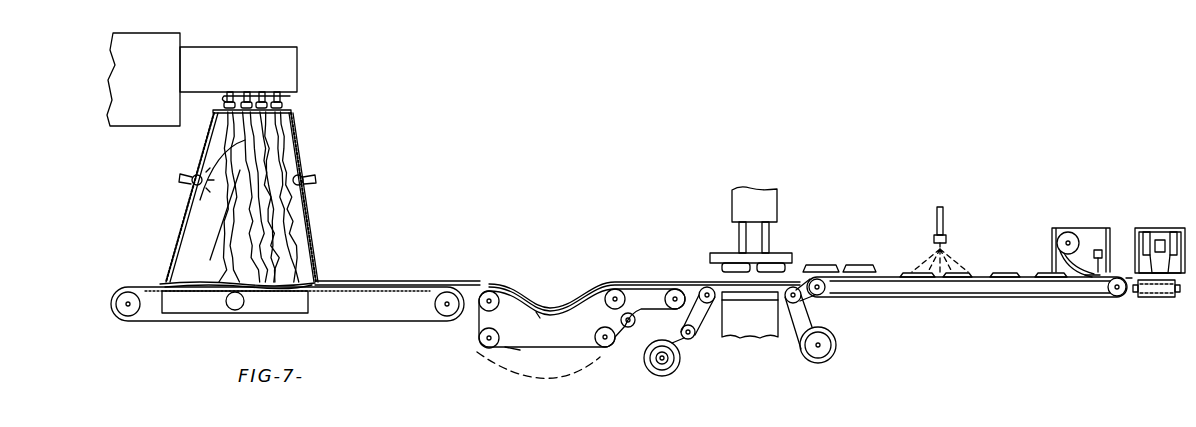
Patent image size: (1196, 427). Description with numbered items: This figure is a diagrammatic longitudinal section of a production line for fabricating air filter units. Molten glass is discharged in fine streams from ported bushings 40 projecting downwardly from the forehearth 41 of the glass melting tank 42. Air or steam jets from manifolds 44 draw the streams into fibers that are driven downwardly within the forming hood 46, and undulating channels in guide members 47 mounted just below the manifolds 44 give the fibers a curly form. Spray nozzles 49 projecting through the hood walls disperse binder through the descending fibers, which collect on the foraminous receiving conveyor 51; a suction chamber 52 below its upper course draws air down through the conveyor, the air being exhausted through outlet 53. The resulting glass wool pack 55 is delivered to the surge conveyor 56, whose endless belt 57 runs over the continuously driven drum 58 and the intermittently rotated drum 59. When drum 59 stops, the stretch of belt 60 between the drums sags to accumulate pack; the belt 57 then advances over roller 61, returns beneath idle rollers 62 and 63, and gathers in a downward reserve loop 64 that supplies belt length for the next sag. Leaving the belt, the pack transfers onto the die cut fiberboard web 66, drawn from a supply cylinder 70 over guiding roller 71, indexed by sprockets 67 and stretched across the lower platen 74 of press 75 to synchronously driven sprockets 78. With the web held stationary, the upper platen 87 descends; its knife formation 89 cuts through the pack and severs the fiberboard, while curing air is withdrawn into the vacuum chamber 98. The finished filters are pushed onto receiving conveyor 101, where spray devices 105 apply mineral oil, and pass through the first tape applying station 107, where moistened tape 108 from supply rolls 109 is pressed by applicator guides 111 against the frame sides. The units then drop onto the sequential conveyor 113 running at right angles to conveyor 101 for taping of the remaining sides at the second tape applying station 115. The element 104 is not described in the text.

The ported bushings 40 is at (236, 96).
The forehearth 41 is at (299, 56).
The glass melting tank 42 is at (136, 122).
The manifolds 44 is at (226, 105).
The forming hood 46 is at (308, 224).
The guide members 47 is at (222, 124).
The spray nozzles 49 is at (190, 183).
The foraminous receiving conveyor 51 is at (132, 288).
The suction chamber 52 is at (176, 314).
The outlet 53 is at (236, 311).
The glass wool pack 55 is at (390, 279).
The surge conveyor 56 is at (478, 330).
The endless belt 57 is at (517, 351).
The continuously driven drum 58 is at (490, 291).
The intermittently rotated drum 59 is at (612, 290).
The stretch of belt 60 is at (538, 312).
The roller 61 is at (667, 290).
The idle roller 62 is at (600, 347).
The idle roller 63 is at (485, 346).
The downward reserve loop 64 is at (546, 385).
The die cut fiberboard web 66 is at (700, 318).
The sprockets 67 is at (704, 303).
The supply cylinder 70 is at (666, 372).
The guiding roller 71 is at (690, 340).
The lower platen 74 is at (736, 302).
The press 75 is at (725, 210).
The sprockets 78 is at (790, 304).
The upper platen 87 is at (786, 262).
The knife formation 89 is at (722, 268).
The vacuum chamber 98 is at (736, 268).
The receiving conveyor 101 is at (868, 297).
The scrap wind-up roll 104 is at (822, 362).
The spray devices 105 is at (935, 240).
The first gummed paper tape applying station 107 is at (1058, 254).
The moistened tape 108 is at (1092, 282).
The supply rolls 109 is at (1066, 233).
The applicator guides 111 is at (1105, 268).
The sequential conveyor 113 is at (1142, 299).
The second tape applying station 115 is at (1181, 222).